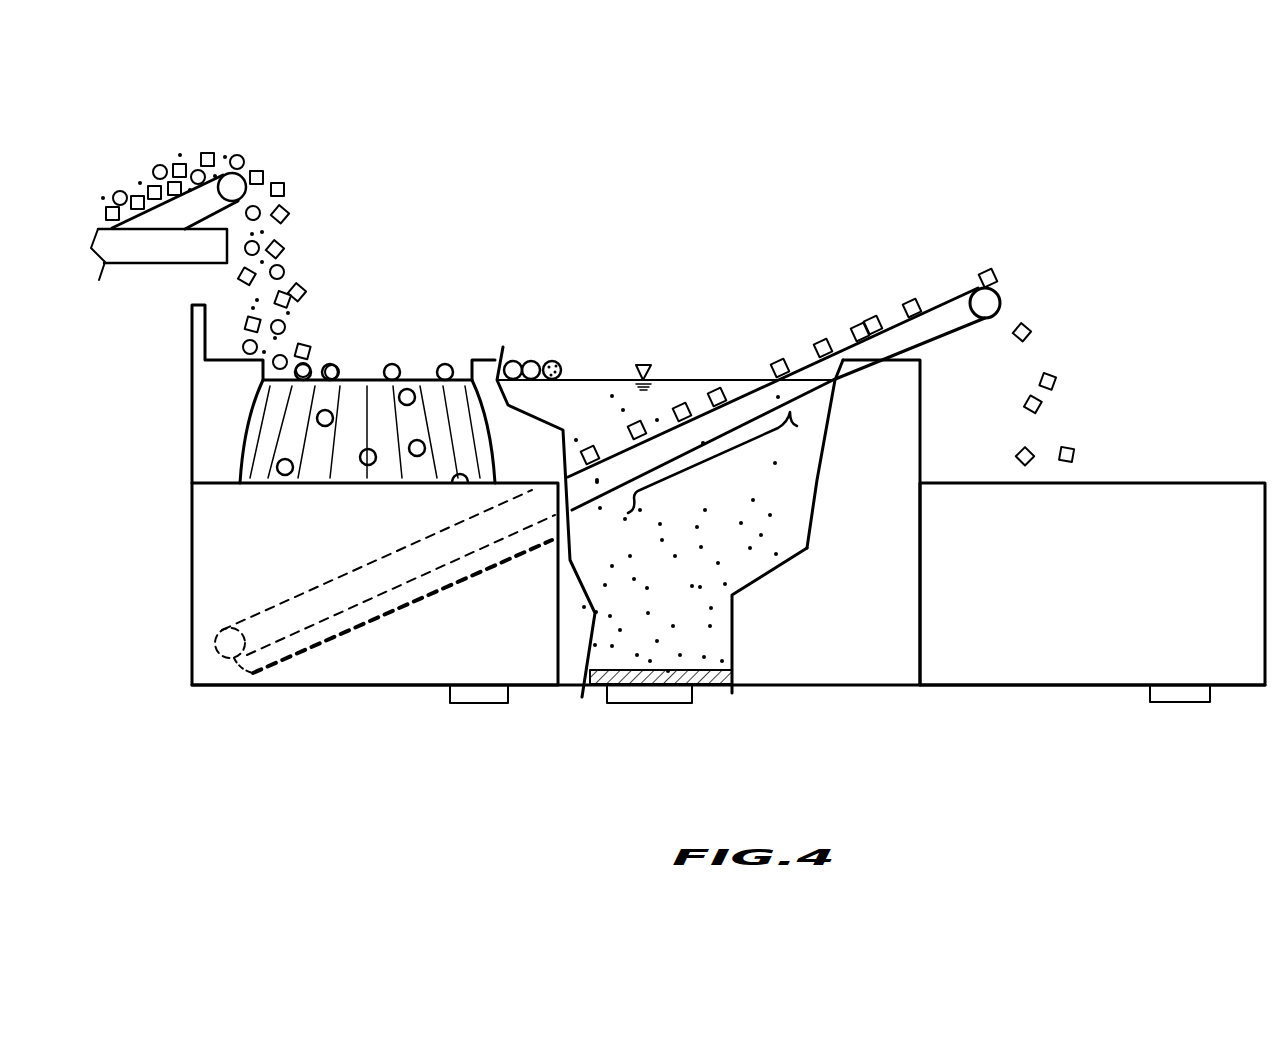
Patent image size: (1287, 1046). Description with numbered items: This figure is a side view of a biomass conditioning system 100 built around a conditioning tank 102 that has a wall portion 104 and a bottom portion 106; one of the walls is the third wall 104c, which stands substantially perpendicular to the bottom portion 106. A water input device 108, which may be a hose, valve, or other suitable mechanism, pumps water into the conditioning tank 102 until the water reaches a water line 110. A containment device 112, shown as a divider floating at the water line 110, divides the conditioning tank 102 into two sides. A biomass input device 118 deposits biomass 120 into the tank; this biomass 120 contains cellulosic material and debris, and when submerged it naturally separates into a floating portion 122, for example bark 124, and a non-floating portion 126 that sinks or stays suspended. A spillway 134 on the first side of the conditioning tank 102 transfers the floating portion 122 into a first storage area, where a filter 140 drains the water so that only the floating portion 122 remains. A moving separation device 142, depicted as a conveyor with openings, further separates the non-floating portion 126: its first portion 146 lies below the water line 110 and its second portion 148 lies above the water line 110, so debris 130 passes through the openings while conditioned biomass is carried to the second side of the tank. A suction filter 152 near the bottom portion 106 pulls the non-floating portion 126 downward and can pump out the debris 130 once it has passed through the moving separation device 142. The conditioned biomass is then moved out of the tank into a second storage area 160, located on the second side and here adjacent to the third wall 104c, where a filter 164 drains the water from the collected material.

The biomass conditioning system 100 is at (216, 108).
The conditioning tank 102 is at (910, 218).
The wall portion 104 is at (190, 495).
The third wall 104c is at (921, 405).
The bottom portion 106 is at (343, 680).
The water input device 108 is at (218, 242).
The water line 110 is at (668, 379).
The containment device 112 is at (553, 366).
The biomass input device 118 is at (238, 195).
The biomass 120 is at (254, 143).
The floating portion 122 is at (725, 330).
The bark 124 is at (395, 366).
The non-floating portion 126 is at (675, 400).
The debris 130 is at (770, 535).
The spillway 134 is at (255, 410).
The filter 140 is at (485, 690).
The moving separation device 142 is at (792, 396).
The first portion 146 is at (704, 481).
The second portion 148 is at (958, 248).
The suction filter 152 is at (675, 690).
The second storage area 160 is at (1200, 503).
The filter 164 is at (1182, 690).